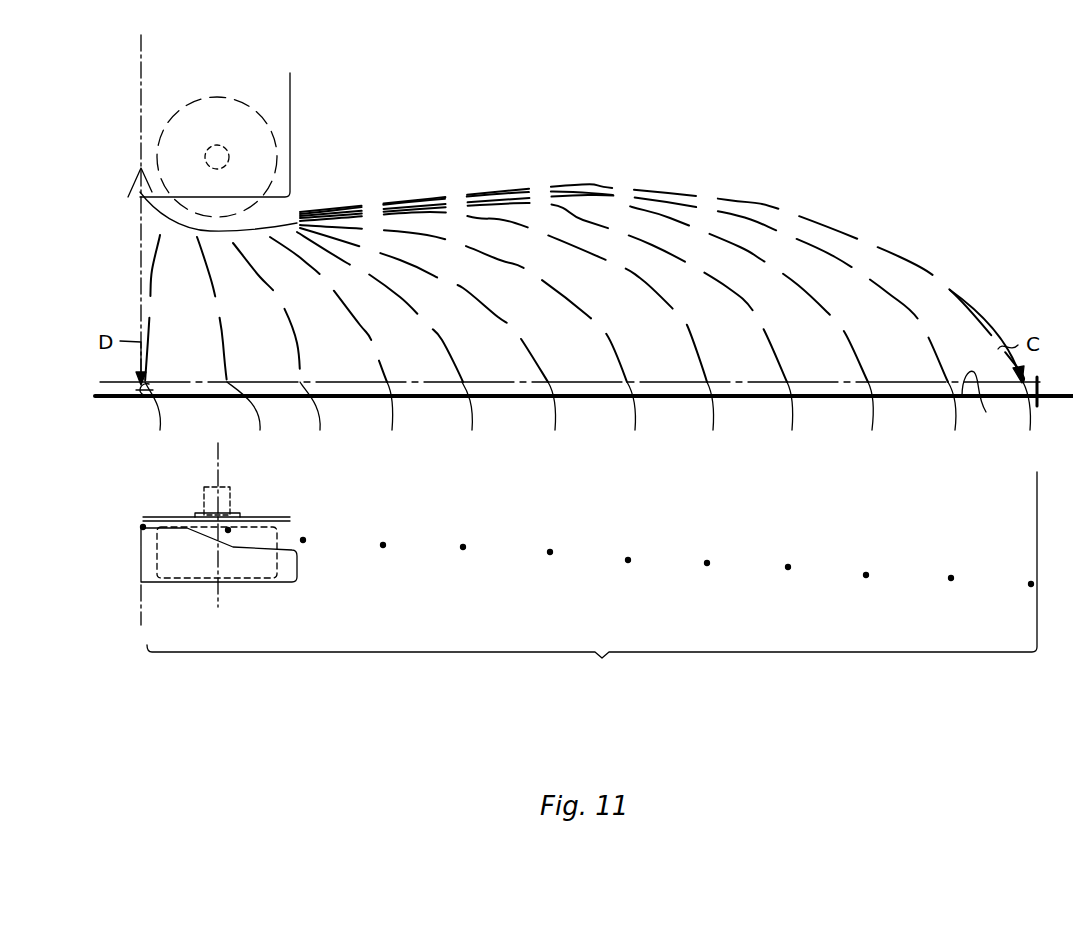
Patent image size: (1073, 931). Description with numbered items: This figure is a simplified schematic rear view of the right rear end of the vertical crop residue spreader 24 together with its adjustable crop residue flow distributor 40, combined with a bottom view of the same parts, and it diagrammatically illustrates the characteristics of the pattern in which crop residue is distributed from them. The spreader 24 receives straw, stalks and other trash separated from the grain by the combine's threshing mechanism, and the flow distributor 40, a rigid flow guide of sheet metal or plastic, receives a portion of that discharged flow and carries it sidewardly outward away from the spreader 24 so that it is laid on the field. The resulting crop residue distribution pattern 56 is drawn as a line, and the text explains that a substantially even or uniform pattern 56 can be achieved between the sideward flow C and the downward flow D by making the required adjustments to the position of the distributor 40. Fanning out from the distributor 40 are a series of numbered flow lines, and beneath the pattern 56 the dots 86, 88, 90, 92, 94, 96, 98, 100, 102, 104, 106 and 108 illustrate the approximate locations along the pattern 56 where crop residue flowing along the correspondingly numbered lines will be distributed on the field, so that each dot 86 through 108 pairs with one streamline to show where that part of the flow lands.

The vertical crop residue spreader 24 is at (291, 97).
The crop residue flow distributor 40 is at (175, 218).
The crop residue distribution pattern 56 is at (983, 406).
The dot 86 is at (144, 526).
The dot 88 is at (229, 529).
The dot 90 is at (303, 540).
The dot 92 is at (383, 545).
The dot 94 is at (463, 547).
The dot 96 is at (550, 552).
The dot 98 is at (628, 560).
The dot 100 is at (707, 563).
The dot 102 is at (788, 567).
The dot 104 is at (866, 575).
The dot 106 is at (951, 578).
The dot 108 is at (1031, 584).